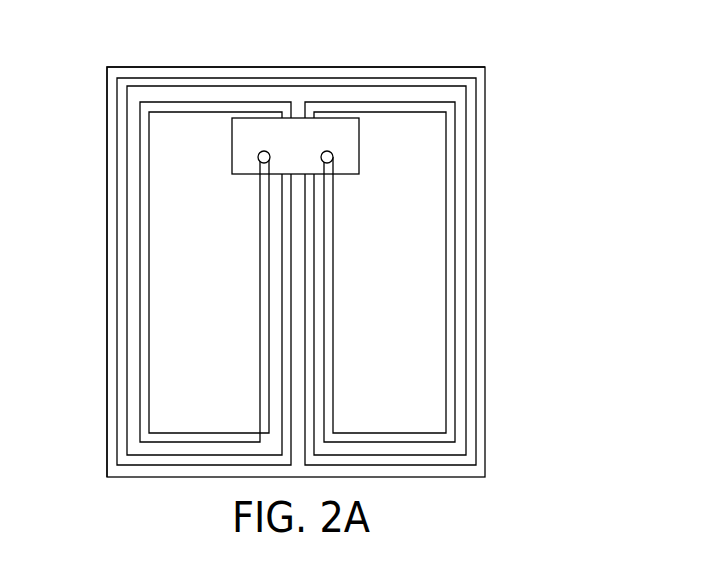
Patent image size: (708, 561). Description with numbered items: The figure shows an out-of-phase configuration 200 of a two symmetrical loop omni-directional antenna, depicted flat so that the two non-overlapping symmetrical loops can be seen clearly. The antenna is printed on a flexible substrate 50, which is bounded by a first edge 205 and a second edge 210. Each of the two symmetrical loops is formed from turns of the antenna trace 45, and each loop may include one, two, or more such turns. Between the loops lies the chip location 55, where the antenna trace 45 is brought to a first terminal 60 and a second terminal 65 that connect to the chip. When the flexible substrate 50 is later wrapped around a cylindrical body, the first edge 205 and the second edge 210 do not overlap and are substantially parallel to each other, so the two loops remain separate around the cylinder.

The out-of-phase configuration 200 is at (576, 61).
The first edge 205 is at (487, 71).
The second edge 210 is at (104, 66).
The antenna trace 45 is at (470, 125).
The flexible substrate 50 is at (193, 124).
The chip location 55 is at (342, 128).
The first terminal 60 is at (332, 160).
The second terminal 65 is at (259, 160).